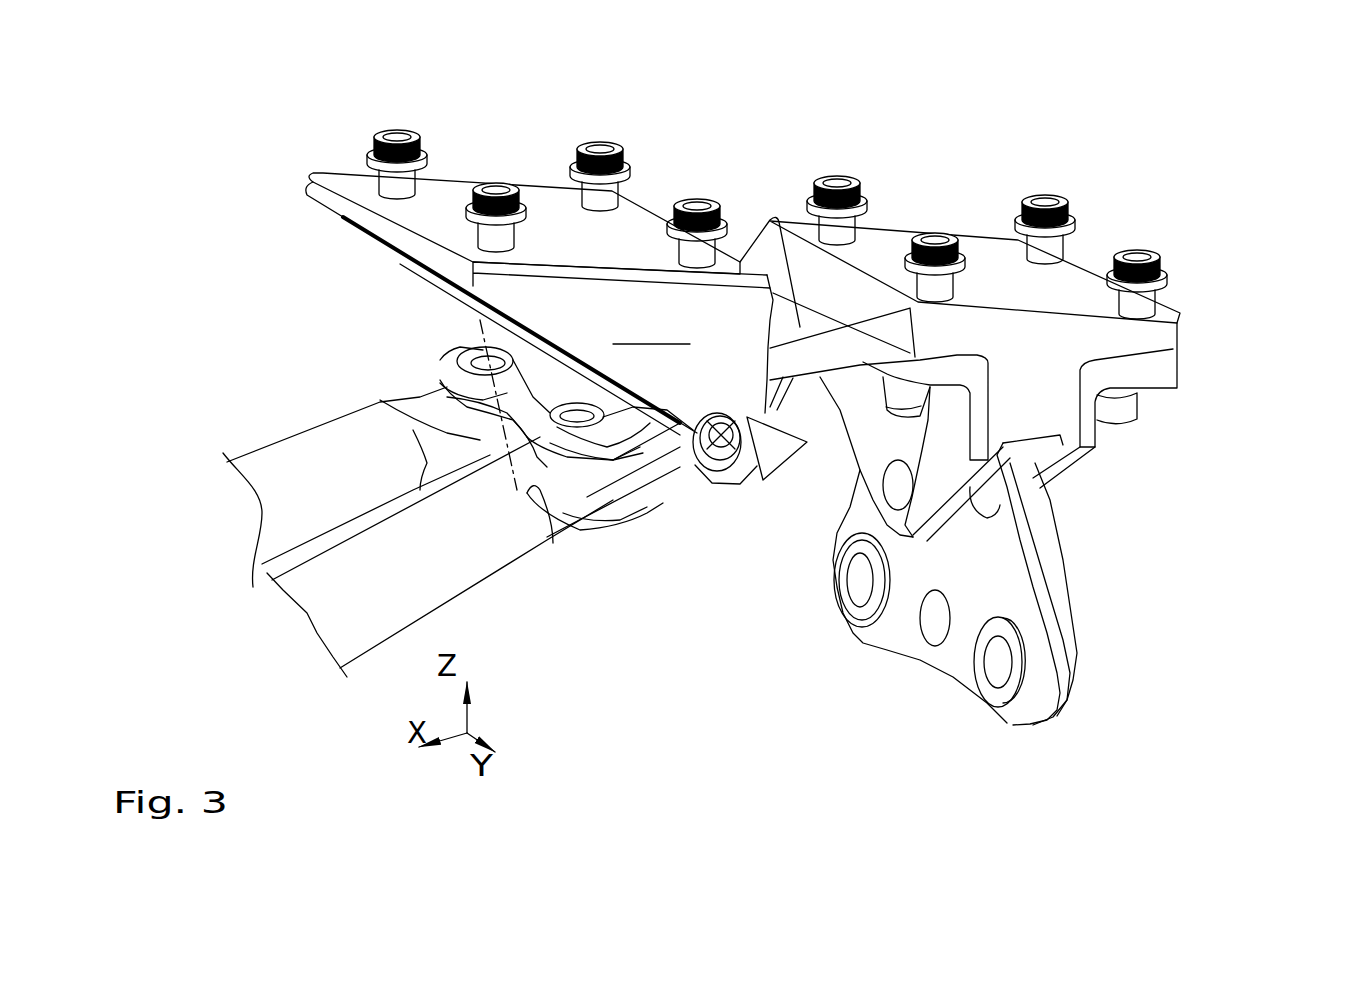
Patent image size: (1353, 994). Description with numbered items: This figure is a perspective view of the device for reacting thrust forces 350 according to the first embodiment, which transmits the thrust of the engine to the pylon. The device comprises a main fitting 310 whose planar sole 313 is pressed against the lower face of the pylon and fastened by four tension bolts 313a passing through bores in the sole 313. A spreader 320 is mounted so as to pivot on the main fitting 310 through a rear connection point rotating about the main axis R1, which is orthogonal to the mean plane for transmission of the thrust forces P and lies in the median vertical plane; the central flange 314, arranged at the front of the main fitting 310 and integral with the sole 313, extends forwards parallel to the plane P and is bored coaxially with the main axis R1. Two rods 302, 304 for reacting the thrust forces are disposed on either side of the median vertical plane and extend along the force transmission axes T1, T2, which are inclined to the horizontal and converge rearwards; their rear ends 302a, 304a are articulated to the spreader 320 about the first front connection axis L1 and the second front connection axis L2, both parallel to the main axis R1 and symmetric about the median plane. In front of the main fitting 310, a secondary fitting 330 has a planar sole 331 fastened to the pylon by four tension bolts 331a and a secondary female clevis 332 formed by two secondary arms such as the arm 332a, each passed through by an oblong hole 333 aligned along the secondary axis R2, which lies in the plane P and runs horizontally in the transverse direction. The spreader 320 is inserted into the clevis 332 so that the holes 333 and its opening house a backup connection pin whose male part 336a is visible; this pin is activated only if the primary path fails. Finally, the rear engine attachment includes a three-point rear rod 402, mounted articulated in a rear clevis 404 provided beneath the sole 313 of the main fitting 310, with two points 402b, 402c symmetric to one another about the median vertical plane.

The rod 302 is at (263, 462).
The rear end 302a is at (303, 317).
The rod 304 is at (350, 645).
The rear end 304a is at (585, 613).
The main fitting 310 is at (1192, 232).
The planar sole 313 is at (1178, 318).
The tension bolts 313a is at (1080, 178).
The central flange 314 is at (778, 216).
The spreader 320 is at (691, 640).
The secondary fitting 330 is at (497, 136).
The planar sole 331 is at (313, 173).
The tension bolts 331a is at (598, 147).
The secondary female clevis 332 is at (290, 242).
The secondary arm 332a is at (651, 326).
The hole 333 is at (703, 473).
The male part 336a is at (743, 483).
The device for reacting thrust forces 350 is at (1197, 139).
The rear rod 402 is at (1148, 689).
The point 402b is at (872, 608).
The point 402c is at (987, 657).
The rear clevis 404 is at (1125, 494).
The first front connection axis L1 is at (477, 347).
The second front connection axis L2 is at (567, 380).
The mean plane for transmission of the thrust forces P is at (777, 448).
The main axis R1 is at (748, 440).
The secondary axis R2 is at (297, 190).
The force transmission axis T1 is at (430, 445).
The force transmission axis T2 is at (555, 478).